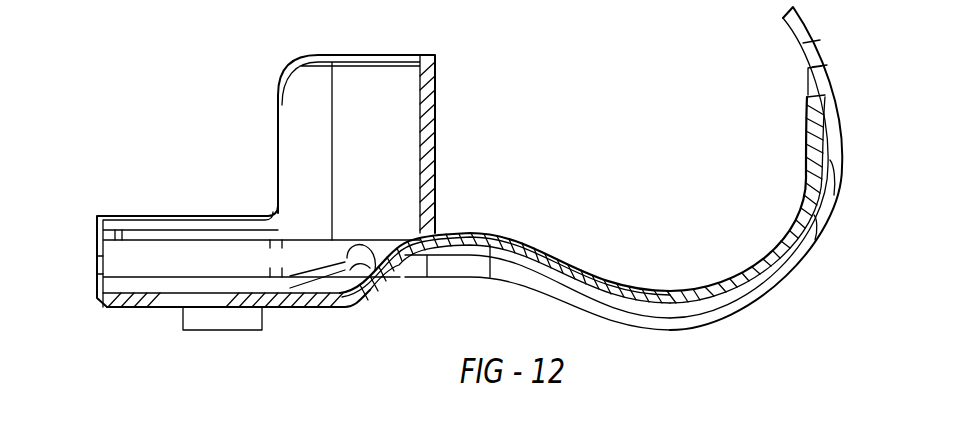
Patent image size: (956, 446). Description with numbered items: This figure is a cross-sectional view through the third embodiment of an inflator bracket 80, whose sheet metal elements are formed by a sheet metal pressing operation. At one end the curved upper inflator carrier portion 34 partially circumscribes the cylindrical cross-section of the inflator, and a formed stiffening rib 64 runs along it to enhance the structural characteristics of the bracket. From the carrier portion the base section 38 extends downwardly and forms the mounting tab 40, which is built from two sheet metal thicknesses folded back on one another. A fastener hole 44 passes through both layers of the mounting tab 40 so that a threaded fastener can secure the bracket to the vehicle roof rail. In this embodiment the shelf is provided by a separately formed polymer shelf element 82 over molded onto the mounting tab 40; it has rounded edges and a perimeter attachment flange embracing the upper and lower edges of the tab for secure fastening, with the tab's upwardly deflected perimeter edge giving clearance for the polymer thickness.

The inflator bracket 80 is at (590, 113).
The shelf element 82 is at (437, 92).
The fastener hole 44 is at (224, 299).
The mounting tab 40 is at (156, 294).
The base section 38 is at (472, 234).
The upper inflator carrier portion 34 is at (795, 192).
The stiffening rib 64 is at (727, 316).